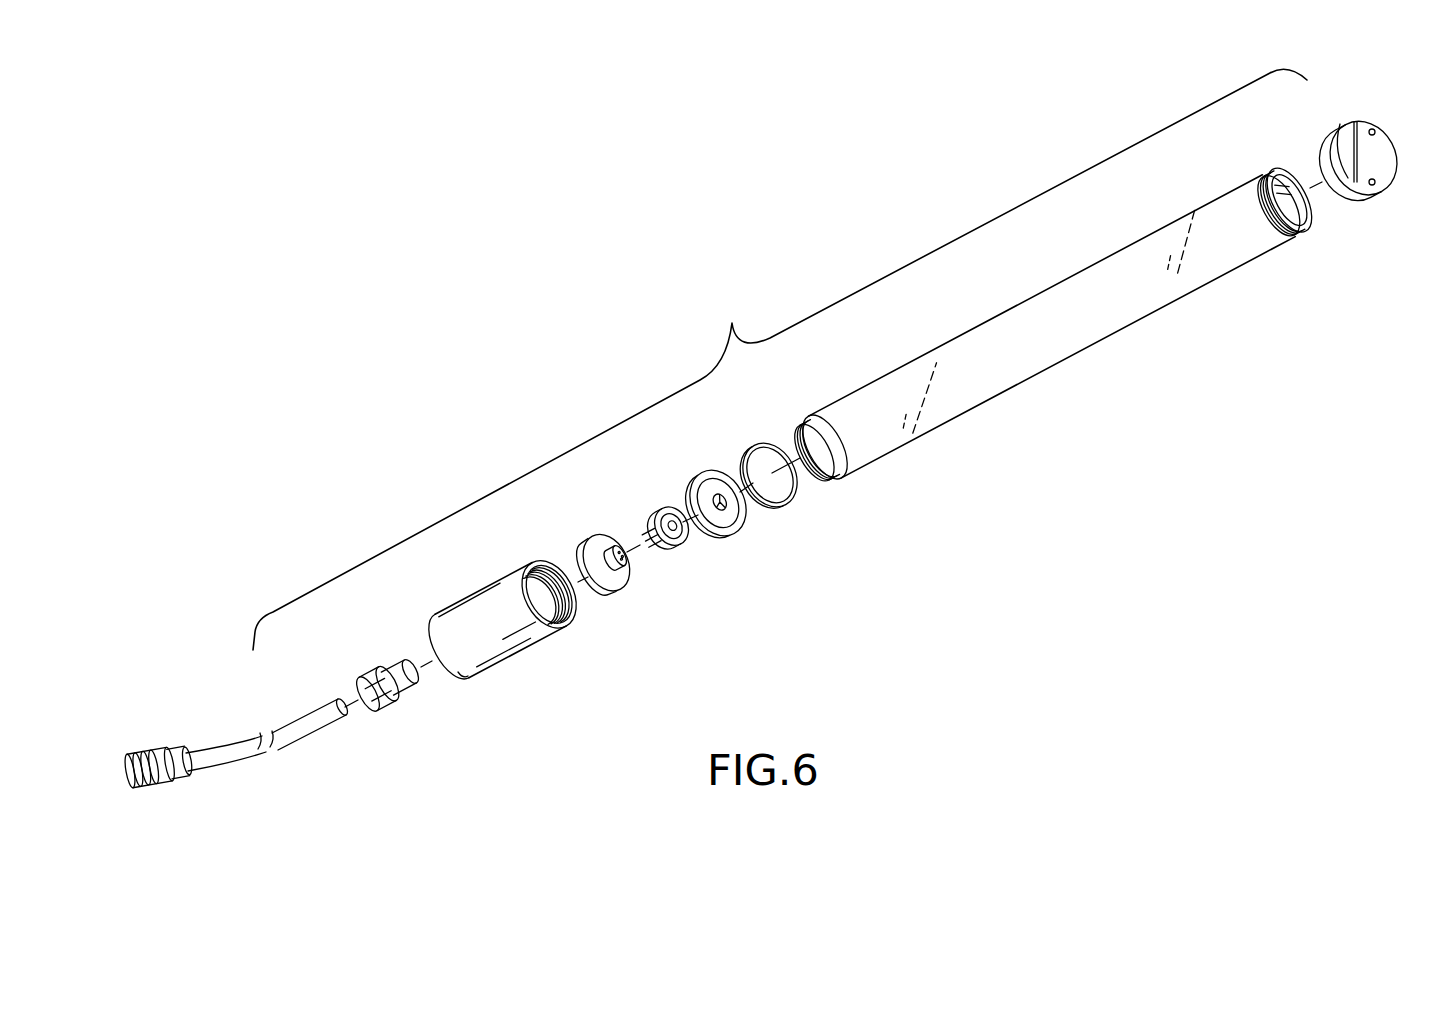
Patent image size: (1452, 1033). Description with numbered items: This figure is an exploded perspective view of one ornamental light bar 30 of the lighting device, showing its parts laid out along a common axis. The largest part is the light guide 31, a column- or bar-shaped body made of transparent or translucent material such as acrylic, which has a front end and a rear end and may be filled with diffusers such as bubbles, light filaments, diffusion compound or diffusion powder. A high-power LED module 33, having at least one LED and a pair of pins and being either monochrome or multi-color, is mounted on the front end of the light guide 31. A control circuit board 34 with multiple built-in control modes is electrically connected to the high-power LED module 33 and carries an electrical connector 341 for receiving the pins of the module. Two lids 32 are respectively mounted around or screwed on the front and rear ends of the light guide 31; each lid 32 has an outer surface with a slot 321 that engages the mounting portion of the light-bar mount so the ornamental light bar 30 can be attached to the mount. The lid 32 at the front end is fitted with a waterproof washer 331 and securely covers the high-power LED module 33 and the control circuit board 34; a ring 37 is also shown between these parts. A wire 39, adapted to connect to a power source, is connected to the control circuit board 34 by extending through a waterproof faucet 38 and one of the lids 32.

The ornamental light bar 30 is at (913, 548).
The light guide 31 is at (1068, 368).
The lid 32 is at (1378, 160).
The slot 321 is at (1358, 122).
The high-power LED module 33 is at (688, 553).
The waterproof washer 331 is at (743, 528).
The control circuit board 34 is at (623, 600).
The electrical connector 341 is at (627, 583).
The O-ring 37 is at (788, 503).
The waterproof faucet 38 is at (368, 660).
The wire 39 is at (296, 730).